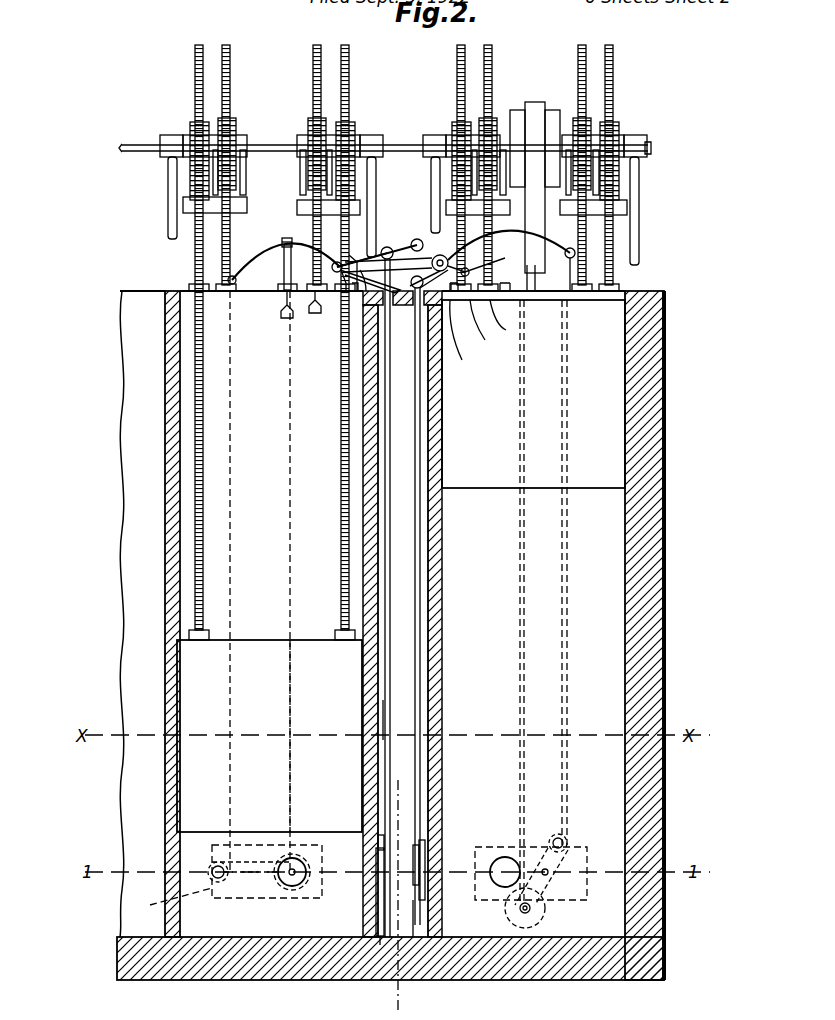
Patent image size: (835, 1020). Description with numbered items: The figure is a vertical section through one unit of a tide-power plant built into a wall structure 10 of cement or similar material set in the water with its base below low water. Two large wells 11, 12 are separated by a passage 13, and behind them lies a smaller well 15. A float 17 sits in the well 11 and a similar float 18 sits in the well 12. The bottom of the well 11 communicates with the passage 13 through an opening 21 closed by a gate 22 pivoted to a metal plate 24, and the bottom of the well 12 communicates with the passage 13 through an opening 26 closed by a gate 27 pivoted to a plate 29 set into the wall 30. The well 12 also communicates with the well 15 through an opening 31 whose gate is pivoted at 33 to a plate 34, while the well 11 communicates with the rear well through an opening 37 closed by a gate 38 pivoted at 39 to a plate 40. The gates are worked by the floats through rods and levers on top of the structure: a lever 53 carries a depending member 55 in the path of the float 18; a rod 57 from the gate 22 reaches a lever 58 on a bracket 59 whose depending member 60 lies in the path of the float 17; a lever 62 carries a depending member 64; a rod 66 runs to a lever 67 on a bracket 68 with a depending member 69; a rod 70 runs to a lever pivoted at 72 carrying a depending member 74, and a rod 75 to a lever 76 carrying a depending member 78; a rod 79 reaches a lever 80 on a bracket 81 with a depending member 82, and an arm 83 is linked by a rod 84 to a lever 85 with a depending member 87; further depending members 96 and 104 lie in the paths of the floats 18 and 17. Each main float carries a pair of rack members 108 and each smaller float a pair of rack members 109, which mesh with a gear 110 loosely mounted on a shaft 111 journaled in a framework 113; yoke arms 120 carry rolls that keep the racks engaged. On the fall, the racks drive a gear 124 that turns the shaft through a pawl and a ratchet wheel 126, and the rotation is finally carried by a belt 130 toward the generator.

The wall structure 10 is at (140, 950).
The well 11 is at (175, 485).
The well 12 is at (165, 790).
The passage 13 is at (400, 572).
The well 15 is at (399, 898).
The float 17 is at (190, 676).
The float 18 is at (615, 425).
The opening 21 is at (372, 870).
The gate 22 is at (382, 945).
The metal plate 24 is at (376, 852).
The opening 26 is at (428, 895).
The gate 27 is at (414, 900).
The plate 29 is at (425, 845).
The wall 30 is at (548, 916).
The opening 31 is at (500, 857).
The pivot 33 is at (550, 875).
The plate 34 is at (585, 846).
The opening 37 is at (295, 890).
The gate 38 is at (312, 845).
The pivot 39 is at (252, 834).
The plate 40 is at (250, 880).
The lever 53 is at (390, 300).
The depending member 55 is at (465, 300).
The rod 57 is at (385, 718).
The lever 58 is at (378, 250).
The bracket 59 is at (348, 300).
The depending member 60 is at (318, 310).
The lever 62 is at (414, 240).
The depending member 64 is at (358, 300).
The rod 66 is at (422, 760).
The lever 67 is at (480, 262).
The bracket 68 is at (440, 255).
The depending member 69 is at (506, 317).
The rod 70 is at (519, 614).
The pivot 72 is at (530, 282).
The depending member 74 is at (520, 302).
The rod 75 is at (567, 690).
The lever 76 is at (565, 250).
The depending member 78 is at (366, 310).
The rod 79 is at (292, 702).
The lever 80 is at (283, 239).
The bracket 81 is at (272, 258).
The depending member 82 is at (284, 305).
The arm 83 is at (226, 888).
The rod 84 is at (230, 765).
The lever 85 is at (248, 568).
The depending member 87 is at (479, 323).
The depending member 96 is at (462, 333).
The depending member 104 is at (358, 330).
The rack member 108 is at (195, 55).
The rack member 109 is at (230, 55).
The gear 110 is at (192, 125).
The shaft 111 is at (130, 145).
The framework 113 is at (168, 200).
The arm 120 is at (213, 178).
The gear 124 is at (236, 128).
The ratchet wheel 126 is at (515, 110).
The belt 130 is at (536, 118).